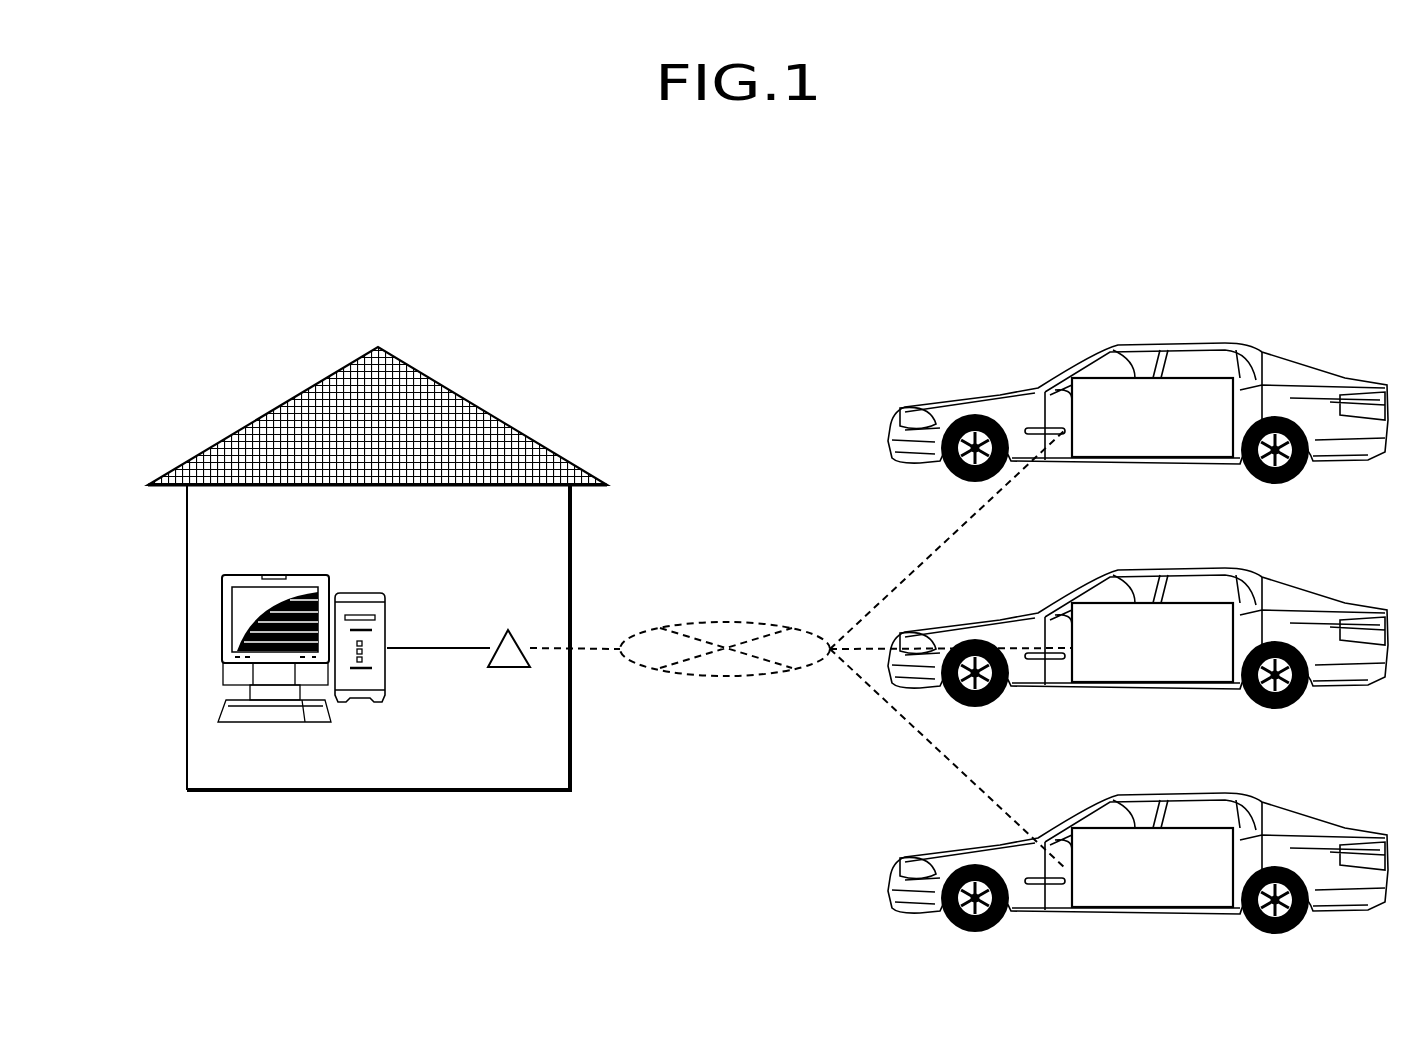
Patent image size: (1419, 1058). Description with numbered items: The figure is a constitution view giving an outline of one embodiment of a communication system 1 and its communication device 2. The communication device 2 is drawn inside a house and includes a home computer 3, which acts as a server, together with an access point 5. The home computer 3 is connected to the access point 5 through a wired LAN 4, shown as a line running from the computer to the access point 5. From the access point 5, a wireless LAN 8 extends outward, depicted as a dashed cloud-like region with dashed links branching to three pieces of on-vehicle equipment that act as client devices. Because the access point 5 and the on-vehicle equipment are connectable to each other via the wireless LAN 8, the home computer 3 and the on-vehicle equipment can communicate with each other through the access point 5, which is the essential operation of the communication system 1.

The communication system 1 is at (298, 322).
The communication device 2 is at (378, 645).
The home computer 3 is at (318, 748).
The wired LAN 4 is at (443, 647).
The access point 5 is at (508, 668).
The wireless LAN 8 is at (728, 670).